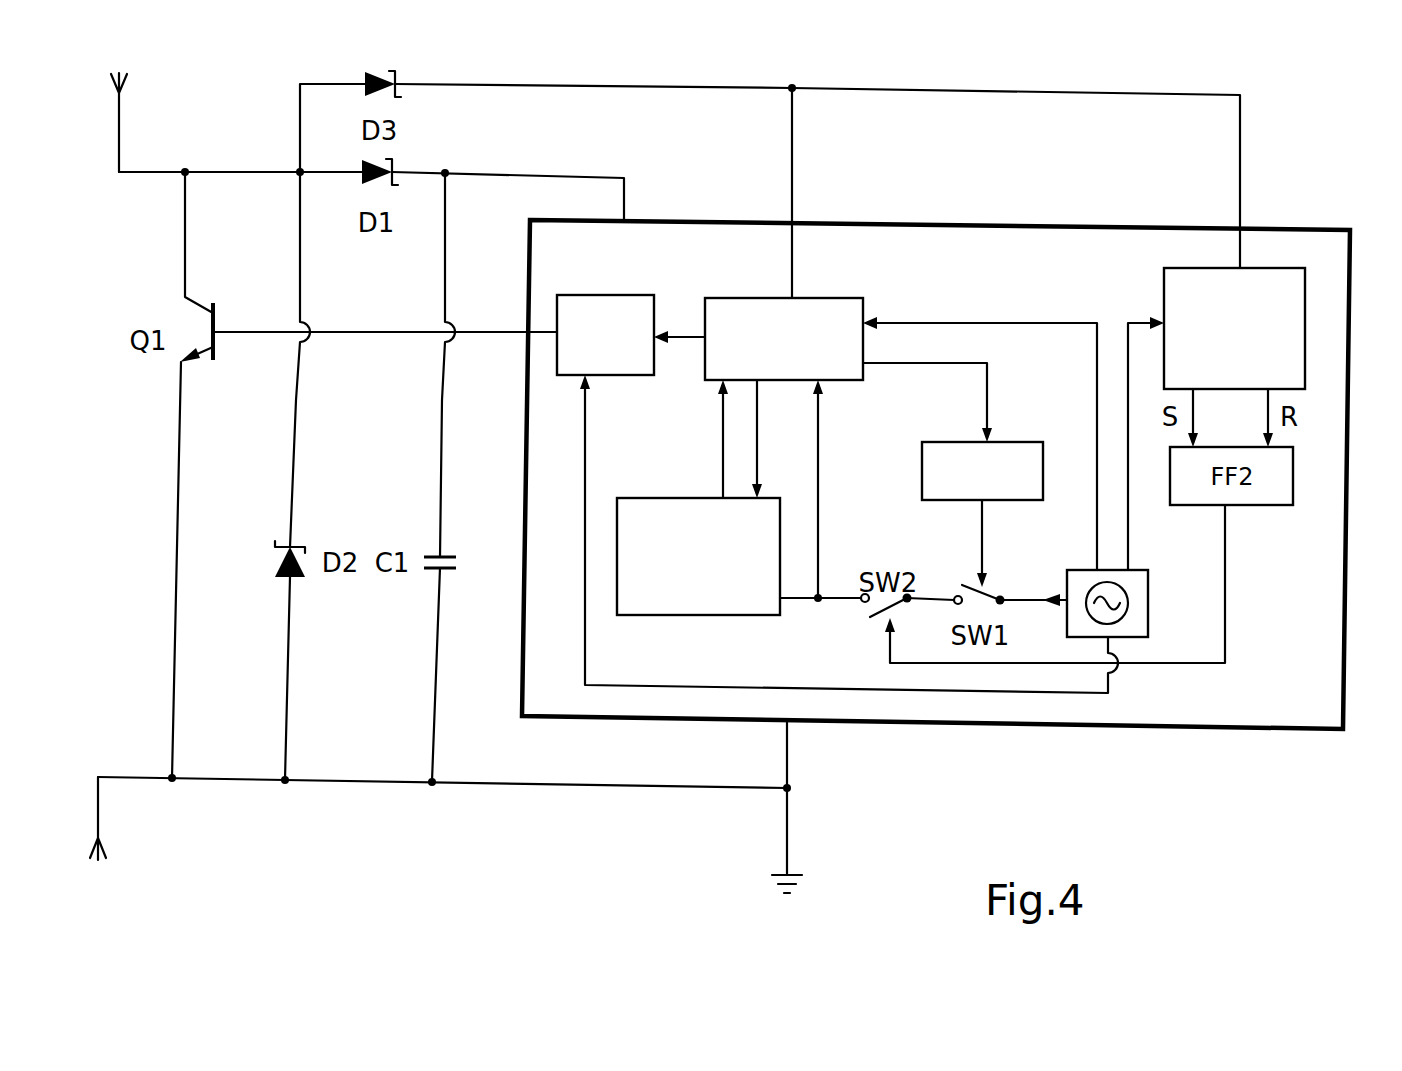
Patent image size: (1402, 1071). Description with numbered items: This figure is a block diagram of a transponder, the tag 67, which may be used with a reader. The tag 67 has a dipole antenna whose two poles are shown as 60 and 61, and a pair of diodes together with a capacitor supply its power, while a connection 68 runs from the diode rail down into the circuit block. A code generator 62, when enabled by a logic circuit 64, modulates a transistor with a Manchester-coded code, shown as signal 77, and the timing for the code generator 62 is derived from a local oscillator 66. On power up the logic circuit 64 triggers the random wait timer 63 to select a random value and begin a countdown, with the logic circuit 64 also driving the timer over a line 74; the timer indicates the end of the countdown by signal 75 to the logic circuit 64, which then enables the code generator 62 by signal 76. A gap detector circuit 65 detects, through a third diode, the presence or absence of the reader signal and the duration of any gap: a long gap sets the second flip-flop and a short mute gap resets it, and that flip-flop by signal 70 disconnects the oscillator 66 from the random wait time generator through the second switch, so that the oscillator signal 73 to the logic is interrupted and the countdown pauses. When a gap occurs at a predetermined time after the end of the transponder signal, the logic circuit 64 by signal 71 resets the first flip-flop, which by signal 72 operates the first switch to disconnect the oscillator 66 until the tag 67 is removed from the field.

The dipole antenna pole 60 is at (124, 86).
The dipole antenna pole 61 is at (104, 848).
The code generator 62 is at (602, 294).
The random wait timer 63 is at (647, 497).
The logic circuit 64 is at (748, 297).
The gap detector circuit 65 is at (1162, 284).
The local oscillator 66 is at (1150, 604).
The tag 67 is at (1020, 725).
The supply line 68 is at (794, 158).
The signal 70 is at (1228, 582).
The signal 71 is at (990, 393).
The signal 72 is at (978, 533).
The signal 73 is at (836, 597).
The line from logic to random wait time generator 74 is at (760, 431).
The signal 75 is at (720, 434).
The signal 76 is at (690, 333).
The signal 77 is at (480, 330).